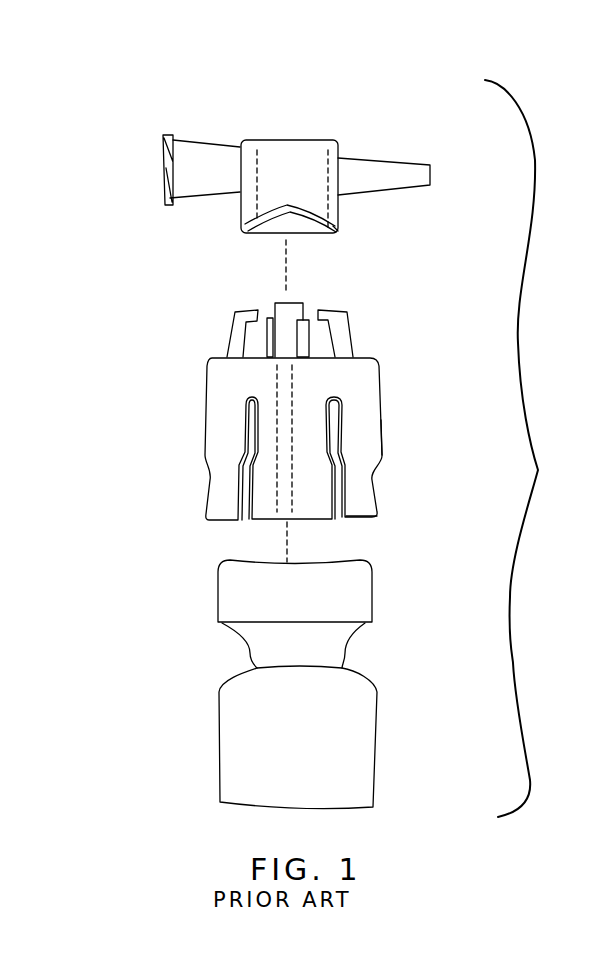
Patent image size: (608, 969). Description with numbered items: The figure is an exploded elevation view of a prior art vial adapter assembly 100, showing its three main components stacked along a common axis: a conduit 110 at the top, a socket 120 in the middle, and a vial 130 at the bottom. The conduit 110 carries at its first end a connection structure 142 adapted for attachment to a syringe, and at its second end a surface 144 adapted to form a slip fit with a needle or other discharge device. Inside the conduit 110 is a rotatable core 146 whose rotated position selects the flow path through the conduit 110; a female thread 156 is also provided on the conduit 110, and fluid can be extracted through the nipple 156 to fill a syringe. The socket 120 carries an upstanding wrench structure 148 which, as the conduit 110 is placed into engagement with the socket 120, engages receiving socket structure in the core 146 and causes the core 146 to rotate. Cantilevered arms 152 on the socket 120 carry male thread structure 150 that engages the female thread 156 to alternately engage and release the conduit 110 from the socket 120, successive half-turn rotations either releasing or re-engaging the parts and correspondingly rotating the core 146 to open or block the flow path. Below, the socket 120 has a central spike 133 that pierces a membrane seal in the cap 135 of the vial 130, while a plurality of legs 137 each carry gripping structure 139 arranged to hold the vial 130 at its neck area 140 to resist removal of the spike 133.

The vial adapter assembly 100 is at (540, 448).
The conduit 110 is at (291, 154).
The connection structure 142 is at (187, 126).
The surface 144 is at (373, 168).
The core 146 is at (303, 165).
The female thread / nipple 156 is at (297, 300).
The wrench structure 148 is at (272, 303).
The male thread structure 150 is at (331, 297).
The cantilevered arms 152 is at (240, 337).
The socket 120 is at (310, 451).
The spike 133 is at (288, 498).
The legs 137 is at (362, 507).
The gripping structure 139 is at (393, 474).
The cap 135 is at (360, 588).
The neck area 140 is at (364, 648).
The vial 130 is at (348, 681).